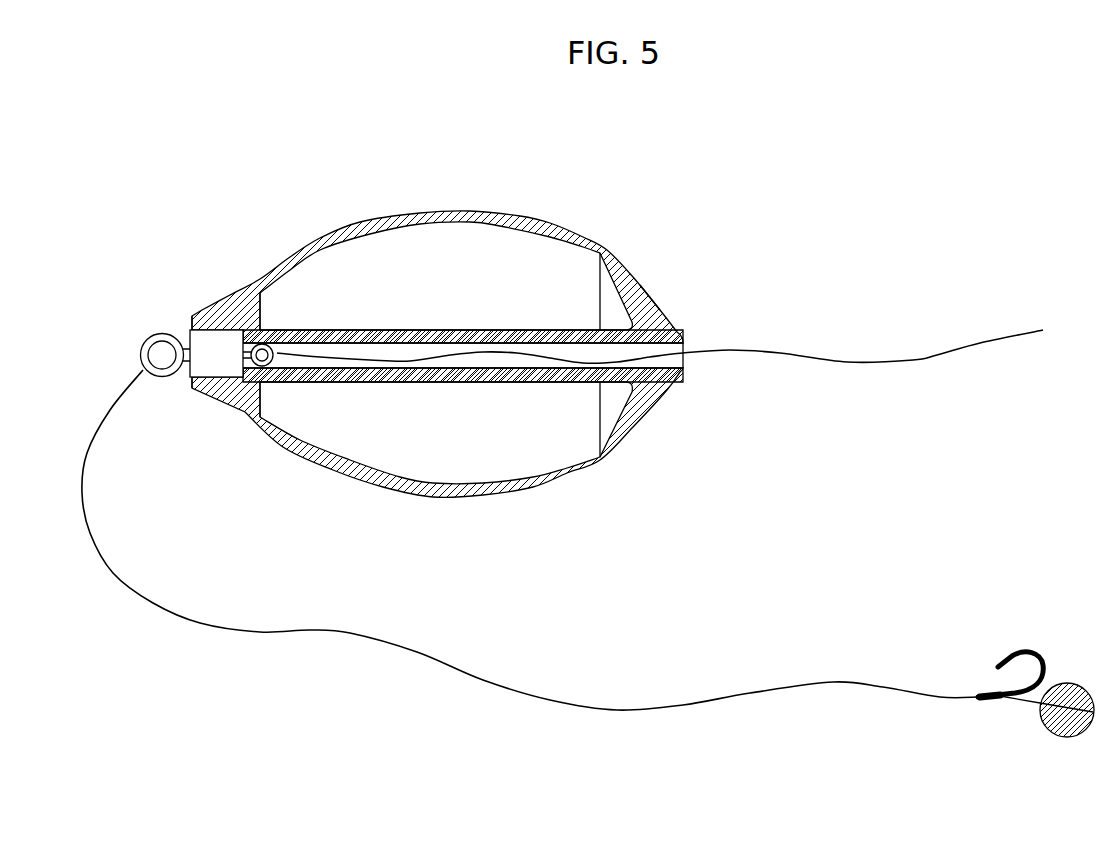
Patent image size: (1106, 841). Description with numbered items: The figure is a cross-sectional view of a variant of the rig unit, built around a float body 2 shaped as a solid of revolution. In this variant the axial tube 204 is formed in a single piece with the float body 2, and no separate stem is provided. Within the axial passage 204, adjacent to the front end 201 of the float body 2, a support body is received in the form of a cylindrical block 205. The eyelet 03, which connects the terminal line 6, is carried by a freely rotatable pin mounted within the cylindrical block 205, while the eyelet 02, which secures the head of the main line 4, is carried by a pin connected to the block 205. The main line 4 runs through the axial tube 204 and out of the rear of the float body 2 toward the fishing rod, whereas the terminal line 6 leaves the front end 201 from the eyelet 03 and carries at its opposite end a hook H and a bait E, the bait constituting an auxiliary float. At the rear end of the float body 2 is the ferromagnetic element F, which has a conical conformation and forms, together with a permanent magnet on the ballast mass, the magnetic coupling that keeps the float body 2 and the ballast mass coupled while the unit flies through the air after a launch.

The float body 2 is at (416, 500).
The main line 4 is at (928, 352).
The terminal line 6 is at (226, 626).
The eyelet 02 is at (272, 338).
The eyelet 03 is at (162, 325).
The front end 201 is at (230, 297).
The axial tube 204 is at (437, 337).
The cylindrical block 205 is at (223, 357).
The ferromagnetic element F is at (660, 297).
The hook H is at (1040, 648).
The bait E is at (1058, 745).